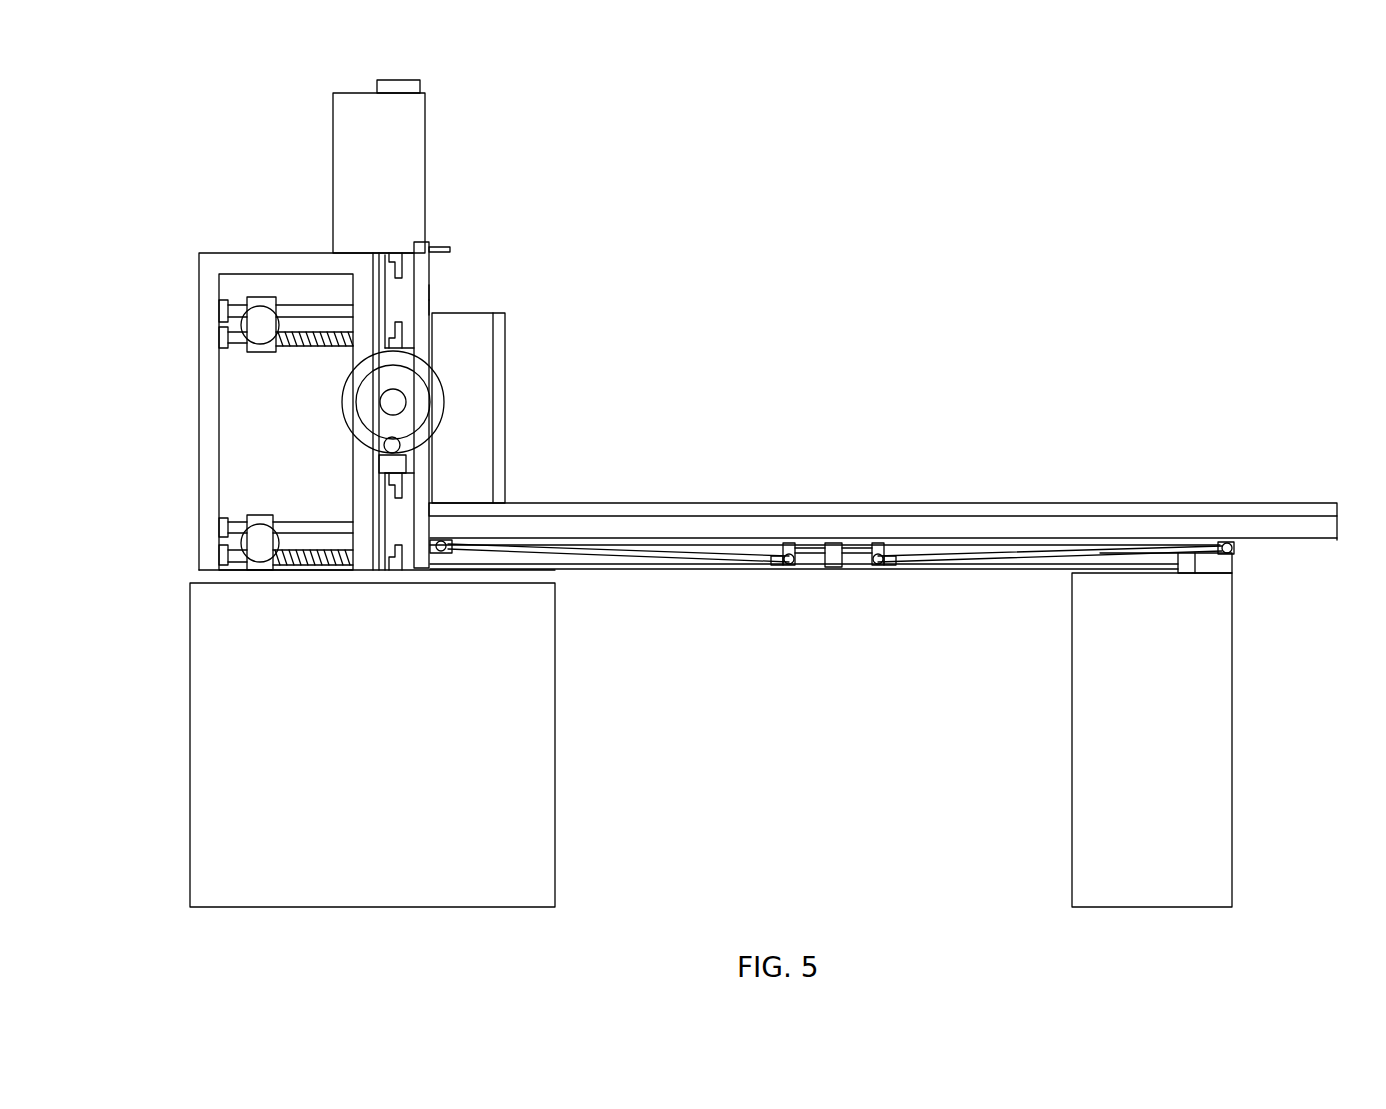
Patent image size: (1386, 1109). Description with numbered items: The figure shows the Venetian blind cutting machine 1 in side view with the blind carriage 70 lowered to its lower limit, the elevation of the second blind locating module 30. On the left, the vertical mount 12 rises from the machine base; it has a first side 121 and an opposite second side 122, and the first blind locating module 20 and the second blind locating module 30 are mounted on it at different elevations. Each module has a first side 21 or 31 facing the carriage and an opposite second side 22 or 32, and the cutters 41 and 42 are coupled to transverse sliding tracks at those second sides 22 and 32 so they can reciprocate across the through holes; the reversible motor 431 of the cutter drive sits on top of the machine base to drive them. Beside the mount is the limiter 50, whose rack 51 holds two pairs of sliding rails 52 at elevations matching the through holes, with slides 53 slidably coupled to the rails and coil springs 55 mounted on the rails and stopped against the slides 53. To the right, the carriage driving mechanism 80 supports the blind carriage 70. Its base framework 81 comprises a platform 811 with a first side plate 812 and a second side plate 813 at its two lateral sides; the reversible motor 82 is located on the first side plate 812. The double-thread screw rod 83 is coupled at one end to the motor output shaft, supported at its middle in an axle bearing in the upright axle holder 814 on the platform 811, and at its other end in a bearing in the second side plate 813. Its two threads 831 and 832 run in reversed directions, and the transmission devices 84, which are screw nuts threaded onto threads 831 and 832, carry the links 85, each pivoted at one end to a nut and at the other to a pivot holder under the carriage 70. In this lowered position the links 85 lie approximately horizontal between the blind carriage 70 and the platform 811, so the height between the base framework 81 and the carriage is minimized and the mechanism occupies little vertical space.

The Venetian blind cutting machine 1 is at (1222, 180).
The vertical mount 12 is at (421, 260).
The first blind locating module 20 is at (413, 252).
The first side 21 is at (429, 307).
The second side 22 is at (386, 291).
The second blind locating module 30 is at (381, 580).
The first side 31 is at (408, 520).
The second side 32 is at (380, 532).
The cutter 41 is at (252, 301).
The cutter 42 is at (379, 504).
The limiter 50 is at (121, 412).
The rack 51 is at (225, 312).
The sliding rails 52 is at (242, 302).
The slides 53 is at (222, 337).
The coil springs 55 is at (260, 353).
The blind carriage 70 is at (1335, 500).
The carriage driving mechanism 80 is at (1262, 604).
The base framework 81 is at (883, 602).
The reversible motor 82 is at (1225, 562).
The double-thread screw rod 83 is at (855, 552).
The transmission devices 84 is at (882, 542).
The links 85 is at (742, 557).
The first side 121 is at (429, 293).
The second side 122 is at (368, 236).
The reversible motor 431 is at (416, 142).
The platform 811 is at (1012, 577).
The first side plate 812 is at (1175, 560).
The second side plate 813 is at (448, 552).
The upright axle holder 814 is at (813, 643).
The thread 831 is at (935, 545).
The thread 832 is at (788, 542).